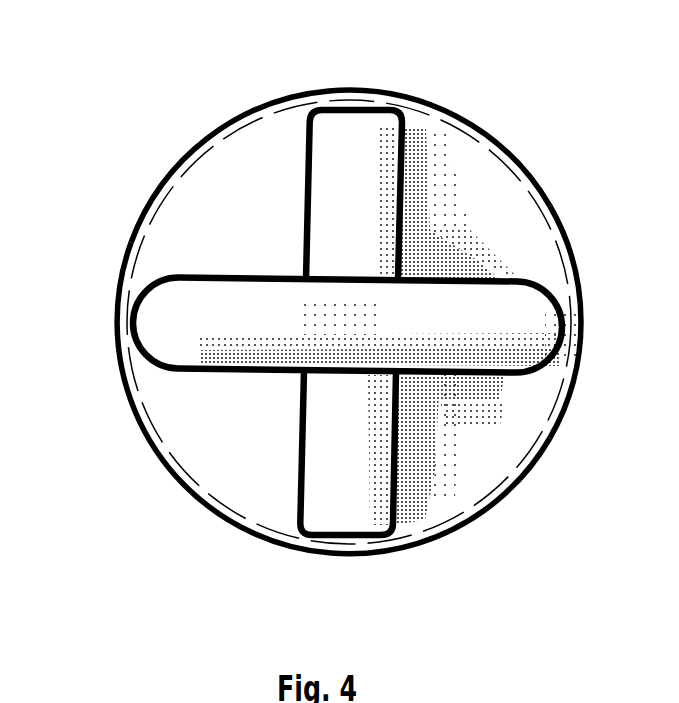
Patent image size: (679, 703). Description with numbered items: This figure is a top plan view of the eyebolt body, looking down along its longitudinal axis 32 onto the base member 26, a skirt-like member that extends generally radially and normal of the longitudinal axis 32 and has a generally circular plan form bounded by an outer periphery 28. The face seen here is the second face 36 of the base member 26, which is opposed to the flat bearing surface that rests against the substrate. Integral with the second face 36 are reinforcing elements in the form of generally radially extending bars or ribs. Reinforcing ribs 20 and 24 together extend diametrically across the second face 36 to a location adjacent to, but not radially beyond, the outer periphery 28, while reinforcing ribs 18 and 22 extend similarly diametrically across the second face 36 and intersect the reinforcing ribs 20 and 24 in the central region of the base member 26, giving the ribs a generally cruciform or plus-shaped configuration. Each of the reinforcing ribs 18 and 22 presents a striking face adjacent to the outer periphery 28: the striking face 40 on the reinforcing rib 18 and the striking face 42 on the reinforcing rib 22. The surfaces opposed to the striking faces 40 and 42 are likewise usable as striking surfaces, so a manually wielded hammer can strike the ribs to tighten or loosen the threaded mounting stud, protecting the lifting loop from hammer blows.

The reinforcing rib 18 is at (405, 106).
The reinforcing rib 20 is at (585, 335).
The reinforcing rib 22 is at (317, 547).
The reinforcing rib 24 is at (130, 331).
The base member 26 is at (637, 702).
The outer periphery 28 is at (580, 262).
The longitudinal axis 32 is at (345, 322).
The second face 36 is at (480, 200).
The striking face 40 is at (310, 142).
The striking face 42 is at (297, 493).